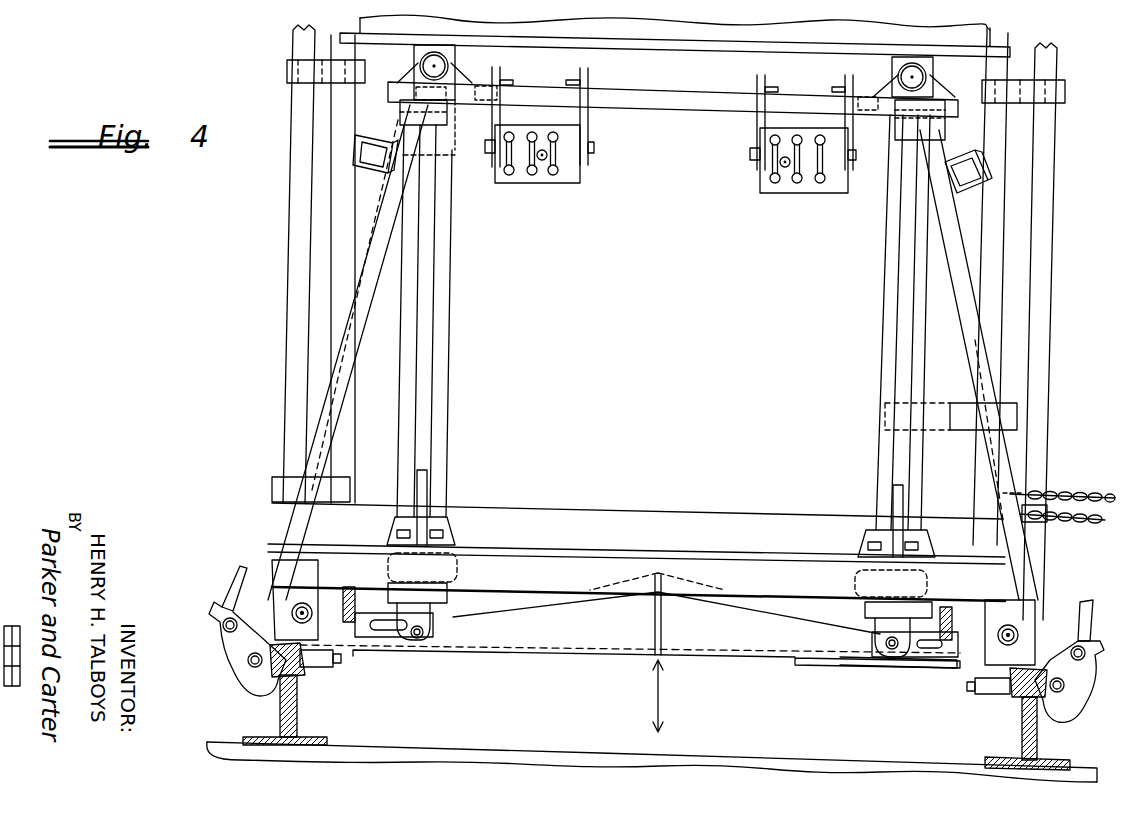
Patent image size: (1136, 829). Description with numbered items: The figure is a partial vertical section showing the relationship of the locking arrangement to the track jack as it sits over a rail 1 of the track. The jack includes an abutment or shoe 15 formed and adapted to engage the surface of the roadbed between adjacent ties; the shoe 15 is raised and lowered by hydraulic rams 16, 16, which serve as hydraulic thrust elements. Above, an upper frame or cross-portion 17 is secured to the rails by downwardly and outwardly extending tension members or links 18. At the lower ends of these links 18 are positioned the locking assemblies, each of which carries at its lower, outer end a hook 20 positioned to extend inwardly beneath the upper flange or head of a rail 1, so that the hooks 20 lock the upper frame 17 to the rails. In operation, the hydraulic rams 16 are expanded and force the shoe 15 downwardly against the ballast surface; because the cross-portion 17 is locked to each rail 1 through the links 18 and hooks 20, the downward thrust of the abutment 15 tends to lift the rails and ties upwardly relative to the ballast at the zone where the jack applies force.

The rail 1 is at (294, 700).
The abutment or shoe 15 is at (625, 628).
The hydraulic rams 16 is at (448, 377).
The upper frame or cross-portion 17 is at (682, 104).
The tension members or links 18 is at (346, 343).
The hook 20 is at (253, 685).